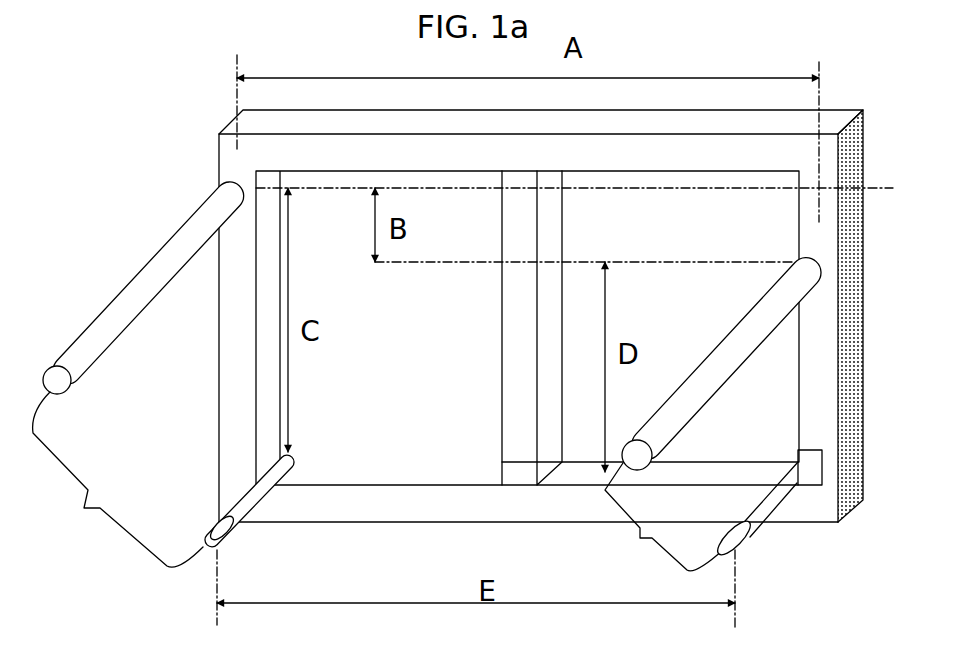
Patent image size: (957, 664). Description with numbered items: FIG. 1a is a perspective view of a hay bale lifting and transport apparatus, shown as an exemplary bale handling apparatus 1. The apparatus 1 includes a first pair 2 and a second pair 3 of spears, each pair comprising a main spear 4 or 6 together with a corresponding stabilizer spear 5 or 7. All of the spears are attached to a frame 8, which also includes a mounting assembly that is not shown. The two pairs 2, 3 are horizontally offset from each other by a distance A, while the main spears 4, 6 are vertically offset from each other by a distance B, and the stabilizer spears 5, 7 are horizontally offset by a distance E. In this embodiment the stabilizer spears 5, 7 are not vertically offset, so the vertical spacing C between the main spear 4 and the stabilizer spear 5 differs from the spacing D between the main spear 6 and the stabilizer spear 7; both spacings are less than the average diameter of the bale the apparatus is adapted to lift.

The bale handling apparatus 1 is at (197, 110).
The first pair of spears 2 is at (84, 508).
The second pair of spears 3 is at (640, 530).
The main spear 4 is at (155, 265).
The stabilizer spear 5 is at (247, 493).
The main spear 6 is at (731, 340).
The stabilizer spear 7 is at (745, 540).
The frame 8 is at (442, 512).